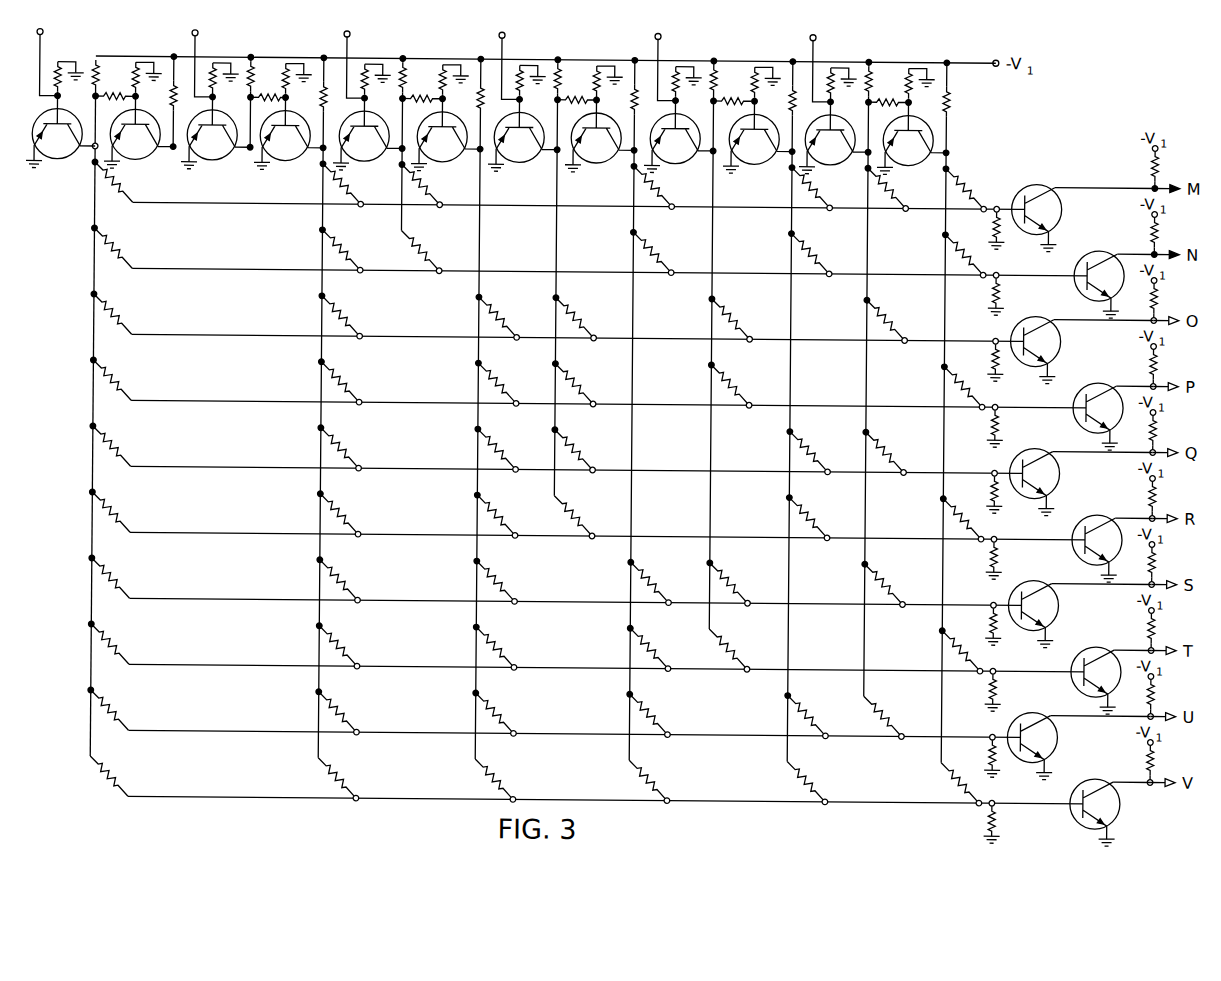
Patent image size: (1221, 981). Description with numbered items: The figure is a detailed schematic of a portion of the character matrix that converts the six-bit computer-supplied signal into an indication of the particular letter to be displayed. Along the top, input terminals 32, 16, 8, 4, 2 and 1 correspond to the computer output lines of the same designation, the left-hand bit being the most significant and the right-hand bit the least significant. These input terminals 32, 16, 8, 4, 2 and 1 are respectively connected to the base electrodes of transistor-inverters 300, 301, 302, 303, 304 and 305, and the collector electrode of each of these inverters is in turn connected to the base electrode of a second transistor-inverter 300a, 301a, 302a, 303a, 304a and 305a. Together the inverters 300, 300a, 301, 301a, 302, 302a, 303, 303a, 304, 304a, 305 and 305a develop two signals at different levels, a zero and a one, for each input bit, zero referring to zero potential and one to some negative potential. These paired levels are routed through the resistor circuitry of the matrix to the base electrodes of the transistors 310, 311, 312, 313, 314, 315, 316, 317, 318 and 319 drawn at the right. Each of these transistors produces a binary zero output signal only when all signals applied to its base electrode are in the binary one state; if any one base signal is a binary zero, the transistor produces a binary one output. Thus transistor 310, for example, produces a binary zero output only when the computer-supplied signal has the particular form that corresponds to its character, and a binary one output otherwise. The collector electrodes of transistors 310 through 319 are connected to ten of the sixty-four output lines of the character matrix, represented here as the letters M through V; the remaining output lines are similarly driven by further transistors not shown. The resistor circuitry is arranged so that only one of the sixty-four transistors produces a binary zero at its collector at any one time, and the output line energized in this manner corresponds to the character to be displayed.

The transistor-inverter 300 is at (63, 159).
The transistor-inverter 300a is at (141, 159).
The transistor-inverter 301 is at (218, 159).
The transistor-inverter 301a is at (291, 159).
The transistor-inverter 302 is at (370, 159).
The transistor-inverter 302a is at (448, 159).
The transistor-inverter 303 is at (525, 159).
The transistor-inverter 303a is at (602, 159).
The transistor-inverter 304 is at (681, 159).
The transistor-inverter 304a is at (760, 159).
The transistor-inverter 305 is at (836, 159).
The transistor-inverter 305a is at (914, 159).
The transistor 310 is at (1062, 202).
The transistor 311 is at (1076, 280).
The transistor 312 is at (1062, 334).
The transistor 313 is at (1076, 412).
The transistor 314 is at (1062, 466).
The transistor 315 is at (1076, 544).
The transistor 316 is at (1062, 598).
The transistor 317 is at (1076, 676).
The transistor 318 is at (1062, 730).
The transistor 319 is at (1076, 808).
The input terminal 32 is at (45, 53).
The input terminal 16 is at (200, 55).
The input terminal 8 is at (355, 56).
The input terminal 4 is at (510, 57).
The input terminal 2 is at (665, 58).
The input terminal 1 is at (821, 60).